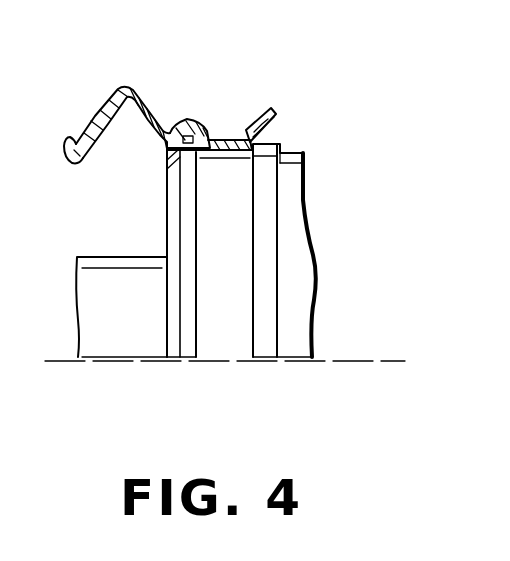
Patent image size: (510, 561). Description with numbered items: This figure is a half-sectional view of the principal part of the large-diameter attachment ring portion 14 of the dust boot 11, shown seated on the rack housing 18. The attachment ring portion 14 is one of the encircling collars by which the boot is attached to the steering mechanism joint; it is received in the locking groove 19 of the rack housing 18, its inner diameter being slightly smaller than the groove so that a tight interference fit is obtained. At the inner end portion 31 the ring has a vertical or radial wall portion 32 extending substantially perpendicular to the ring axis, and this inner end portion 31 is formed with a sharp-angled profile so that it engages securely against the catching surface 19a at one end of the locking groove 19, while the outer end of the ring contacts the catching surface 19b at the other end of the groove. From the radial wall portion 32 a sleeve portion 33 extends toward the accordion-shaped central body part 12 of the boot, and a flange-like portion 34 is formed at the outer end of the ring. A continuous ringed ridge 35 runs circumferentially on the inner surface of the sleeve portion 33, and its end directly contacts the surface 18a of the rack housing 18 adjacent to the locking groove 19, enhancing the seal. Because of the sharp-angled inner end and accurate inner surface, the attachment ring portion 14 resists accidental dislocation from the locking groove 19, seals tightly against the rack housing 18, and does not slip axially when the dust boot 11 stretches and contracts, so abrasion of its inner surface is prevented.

The dust boot 11 is at (124, 83).
The central body part 12 is at (88, 123).
The attachment ring portion 14 is at (303, 177).
The rack housing 18 is at (265, 327).
The surface of rack housing 18a is at (188, 226).
The locking groove 19 is at (218, 333).
The catching surface 19a is at (197, 300).
The catching surface 19b is at (253, 218).
The inner end portion 31 is at (193, 148).
The radial wall portion 32 is at (204, 128).
The sleeve portion 33 is at (182, 123).
The flange-like portion 34 is at (280, 124).
The ringed ridge 35 is at (173, 142).